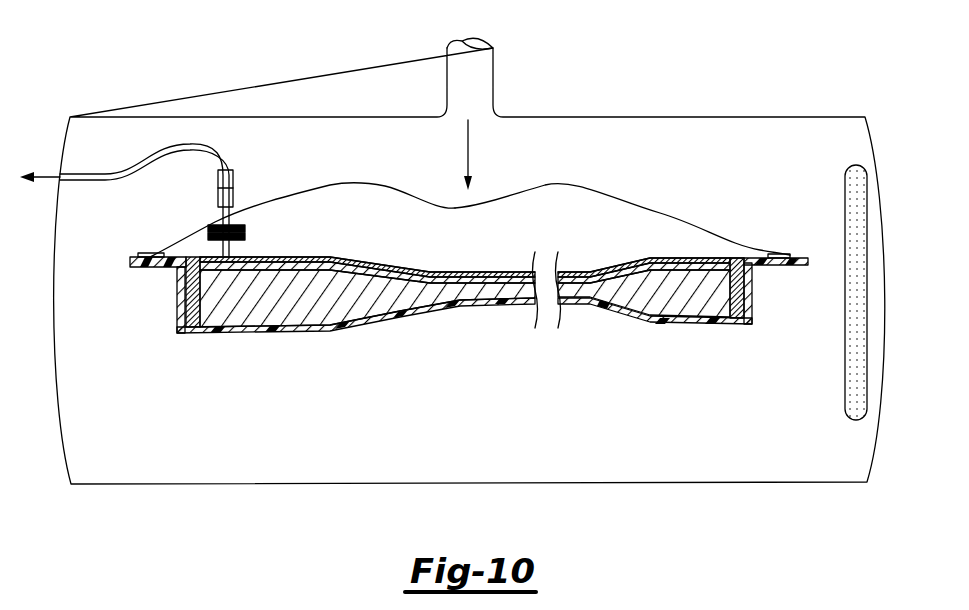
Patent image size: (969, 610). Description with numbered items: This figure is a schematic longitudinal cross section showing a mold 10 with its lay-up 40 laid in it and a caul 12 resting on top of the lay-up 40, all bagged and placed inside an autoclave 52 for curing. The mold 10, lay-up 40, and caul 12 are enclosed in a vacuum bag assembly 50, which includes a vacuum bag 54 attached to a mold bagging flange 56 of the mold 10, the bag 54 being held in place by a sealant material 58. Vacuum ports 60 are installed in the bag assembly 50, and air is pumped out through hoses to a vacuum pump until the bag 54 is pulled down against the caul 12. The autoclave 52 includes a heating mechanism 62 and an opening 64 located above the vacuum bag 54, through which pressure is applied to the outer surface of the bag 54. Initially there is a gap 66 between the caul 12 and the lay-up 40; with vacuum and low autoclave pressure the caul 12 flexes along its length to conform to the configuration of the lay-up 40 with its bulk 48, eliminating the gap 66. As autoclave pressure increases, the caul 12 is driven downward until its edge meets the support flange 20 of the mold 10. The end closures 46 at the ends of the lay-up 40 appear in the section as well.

The mold 10 is at (613, 308).
The caul 12 is at (282, 250).
The support flange 20 is at (175, 270).
The lay-up 40 is at (430, 295).
The end closure 46 is at (192, 326).
The bulk 48 is at (428, 266).
The vacuum bag assembly 50 is at (668, 188).
The autoclave 52 is at (786, 117).
The vacuum bag 54 is at (325, 187).
The mold bagging flange 56 is at (131, 257).
The sealant material 58 is at (155, 253).
The vacuum port 60 is at (244, 213).
The heating mechanism 62 is at (845, 230).
The opening 64 is at (493, 95).
The gap 66 is at (549, 279).